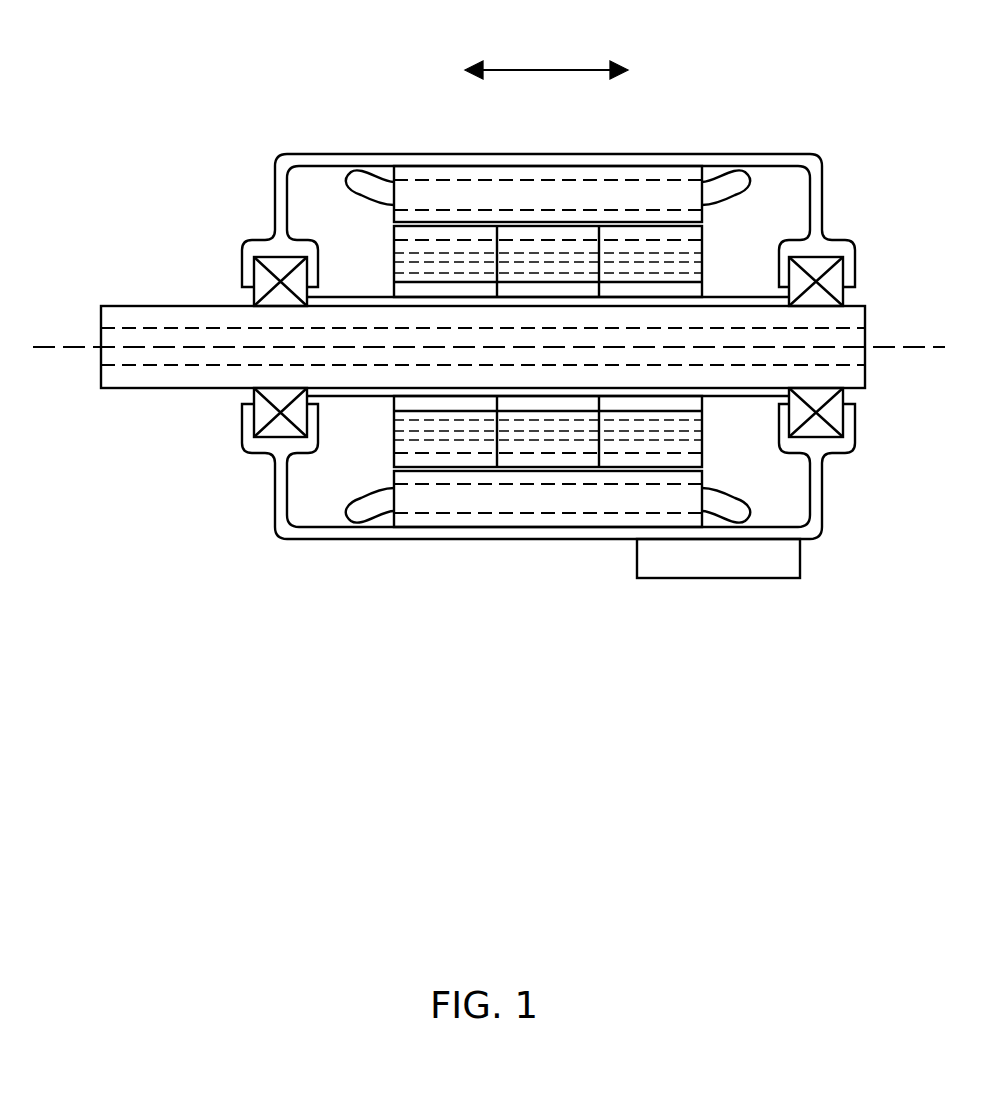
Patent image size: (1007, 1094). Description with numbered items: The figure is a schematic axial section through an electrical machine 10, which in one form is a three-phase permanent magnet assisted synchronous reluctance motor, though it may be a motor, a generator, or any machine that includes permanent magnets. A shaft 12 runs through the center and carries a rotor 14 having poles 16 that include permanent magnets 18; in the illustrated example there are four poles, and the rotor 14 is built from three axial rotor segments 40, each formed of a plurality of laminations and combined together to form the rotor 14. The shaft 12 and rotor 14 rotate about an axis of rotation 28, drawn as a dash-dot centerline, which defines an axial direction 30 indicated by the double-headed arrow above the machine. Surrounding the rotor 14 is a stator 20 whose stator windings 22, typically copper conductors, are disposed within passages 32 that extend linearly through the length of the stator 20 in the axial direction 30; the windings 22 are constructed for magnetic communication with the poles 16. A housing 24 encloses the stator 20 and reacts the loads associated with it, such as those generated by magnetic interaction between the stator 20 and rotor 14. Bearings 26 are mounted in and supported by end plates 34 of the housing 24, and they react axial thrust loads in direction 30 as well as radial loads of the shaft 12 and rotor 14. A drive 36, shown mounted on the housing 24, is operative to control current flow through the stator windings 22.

The electrical machine 10 is at (178, 104).
The shaft 12 is at (122, 305).
The rotor 14 is at (362, 436).
The poles 16 is at (703, 231).
The permanent magnets 18 is at (466, 271).
The stator 20 is at (393, 213).
The stator windings 22 is at (748, 171).
The housing 24 is at (554, 155).
The bearings 26 is at (253, 300).
The axis of rotation 28 is at (57, 349).
The axial direction 30 is at (557, 70).
The passages 32 is at (455, 515).
The end plates 34 is at (275, 504).
The drive 36 is at (747, 580).
The axial rotor segments 40 is at (407, 457).